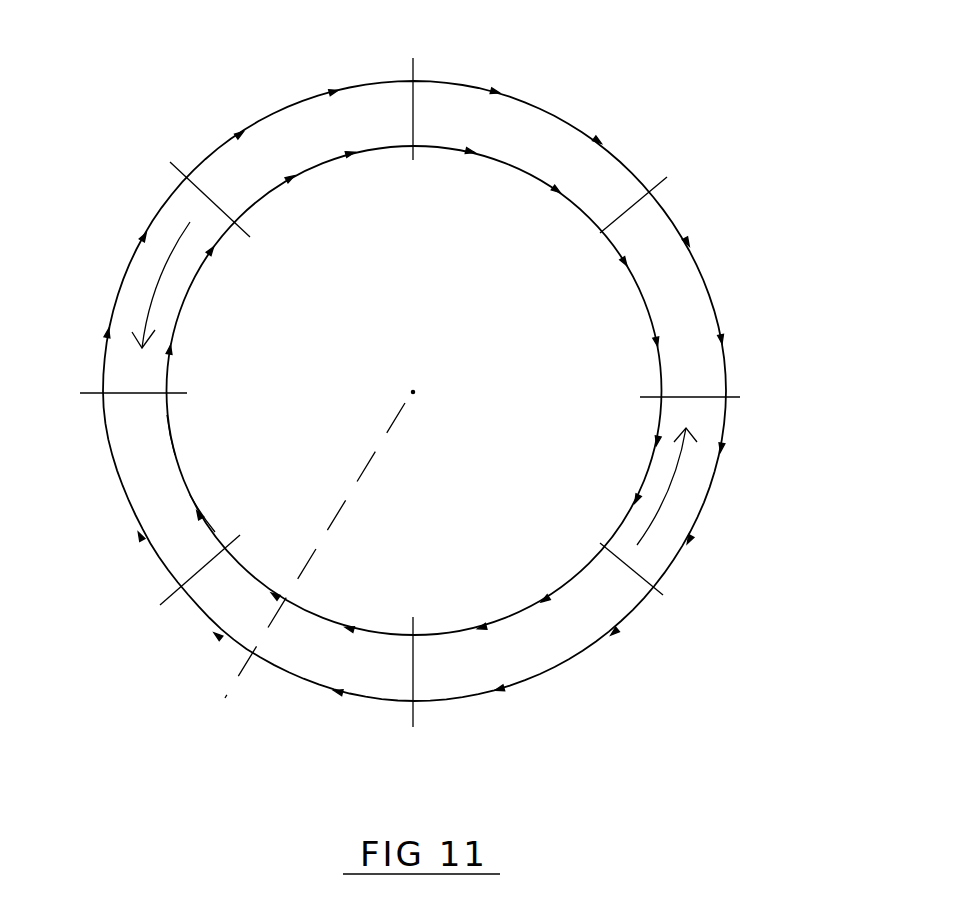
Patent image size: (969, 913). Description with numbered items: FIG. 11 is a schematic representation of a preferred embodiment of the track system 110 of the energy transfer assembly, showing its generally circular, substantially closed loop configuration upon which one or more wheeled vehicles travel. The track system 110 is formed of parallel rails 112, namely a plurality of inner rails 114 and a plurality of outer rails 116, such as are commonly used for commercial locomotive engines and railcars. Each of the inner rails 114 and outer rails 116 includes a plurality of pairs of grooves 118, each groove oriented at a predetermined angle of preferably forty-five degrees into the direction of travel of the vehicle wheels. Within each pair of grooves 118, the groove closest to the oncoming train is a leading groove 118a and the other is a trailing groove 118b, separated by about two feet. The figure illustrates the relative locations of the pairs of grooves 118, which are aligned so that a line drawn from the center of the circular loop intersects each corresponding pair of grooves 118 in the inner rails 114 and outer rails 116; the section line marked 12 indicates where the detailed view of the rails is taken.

The track system 110 is at (656, 96).
The parallel rails 112 is at (654, 323).
The inner rails 114 is at (413, 390).
The outer rails 116 is at (116, 246).
The pairs of grooves 118 is at (727, 448).
The leading groove 118a is at (231, 422).
The trailing groove 118b is at (258, 498).
The section line 12- 12 is at (509, 592).